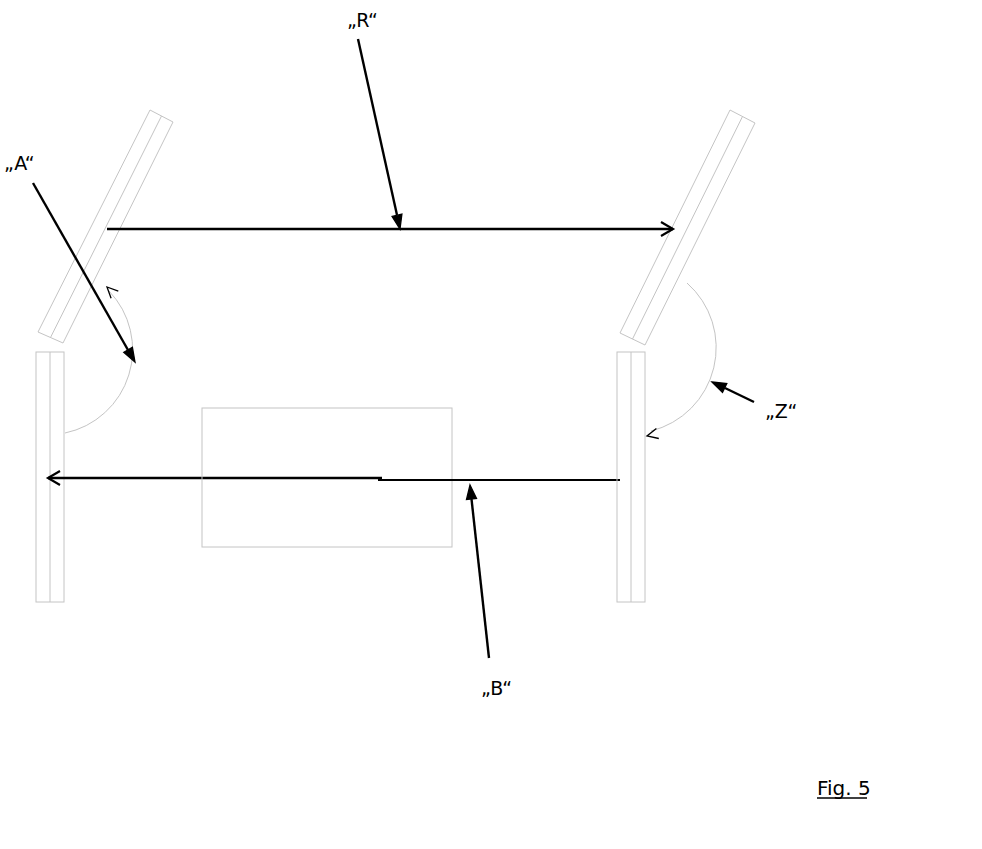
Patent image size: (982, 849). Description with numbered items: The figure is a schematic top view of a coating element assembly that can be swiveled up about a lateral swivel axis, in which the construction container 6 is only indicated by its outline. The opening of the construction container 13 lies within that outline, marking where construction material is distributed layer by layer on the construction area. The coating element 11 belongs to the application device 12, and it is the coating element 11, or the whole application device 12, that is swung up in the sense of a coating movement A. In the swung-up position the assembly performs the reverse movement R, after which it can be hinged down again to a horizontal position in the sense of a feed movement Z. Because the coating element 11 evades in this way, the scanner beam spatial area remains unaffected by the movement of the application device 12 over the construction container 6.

The construction container 6 is at (288, 514).
The coating element 11 is at (630, 583).
The application device 12 is at (642, 500).
The opening of the construction container 13 is at (378, 543).